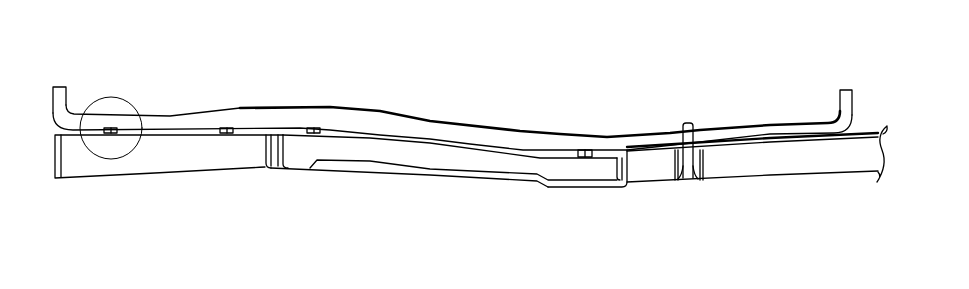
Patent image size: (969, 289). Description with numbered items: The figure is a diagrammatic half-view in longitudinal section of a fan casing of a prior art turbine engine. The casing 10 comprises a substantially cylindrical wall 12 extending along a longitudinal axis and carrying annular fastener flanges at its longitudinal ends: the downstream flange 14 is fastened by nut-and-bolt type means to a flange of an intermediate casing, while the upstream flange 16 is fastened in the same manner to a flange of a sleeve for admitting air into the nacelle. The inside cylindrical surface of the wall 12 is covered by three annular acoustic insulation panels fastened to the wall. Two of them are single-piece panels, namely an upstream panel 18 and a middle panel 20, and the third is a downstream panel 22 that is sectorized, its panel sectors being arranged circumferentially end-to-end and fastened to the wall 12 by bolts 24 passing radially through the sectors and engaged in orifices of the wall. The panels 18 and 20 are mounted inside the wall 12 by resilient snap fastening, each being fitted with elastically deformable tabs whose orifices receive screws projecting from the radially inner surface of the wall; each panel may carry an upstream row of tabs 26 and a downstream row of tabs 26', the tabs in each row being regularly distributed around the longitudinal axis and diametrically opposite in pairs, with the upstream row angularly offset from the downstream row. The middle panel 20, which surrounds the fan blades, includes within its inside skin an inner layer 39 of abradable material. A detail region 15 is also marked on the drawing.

The casing 10 is at (672, 82).
The cylindrical wall 12 is at (432, 128).
The downstream flange 14 is at (846, 89).
The detail region 15 is at (87, 155).
The upstream flange 16 is at (60, 86).
The upstream panel 18 is at (233, 168).
The middle panel 20 is at (591, 187).
The downstream panel 22 is at (823, 157).
The bolts 24 is at (690, 181).
The tabs 26 is at (222, 102).
The tabs 26' is at (424, 104).
The inner layer of abradable material 39 is at (455, 174).